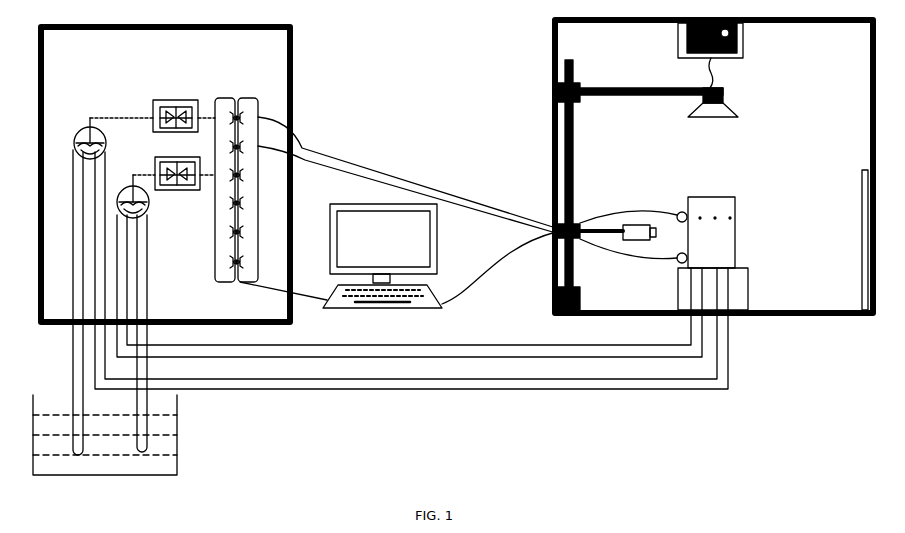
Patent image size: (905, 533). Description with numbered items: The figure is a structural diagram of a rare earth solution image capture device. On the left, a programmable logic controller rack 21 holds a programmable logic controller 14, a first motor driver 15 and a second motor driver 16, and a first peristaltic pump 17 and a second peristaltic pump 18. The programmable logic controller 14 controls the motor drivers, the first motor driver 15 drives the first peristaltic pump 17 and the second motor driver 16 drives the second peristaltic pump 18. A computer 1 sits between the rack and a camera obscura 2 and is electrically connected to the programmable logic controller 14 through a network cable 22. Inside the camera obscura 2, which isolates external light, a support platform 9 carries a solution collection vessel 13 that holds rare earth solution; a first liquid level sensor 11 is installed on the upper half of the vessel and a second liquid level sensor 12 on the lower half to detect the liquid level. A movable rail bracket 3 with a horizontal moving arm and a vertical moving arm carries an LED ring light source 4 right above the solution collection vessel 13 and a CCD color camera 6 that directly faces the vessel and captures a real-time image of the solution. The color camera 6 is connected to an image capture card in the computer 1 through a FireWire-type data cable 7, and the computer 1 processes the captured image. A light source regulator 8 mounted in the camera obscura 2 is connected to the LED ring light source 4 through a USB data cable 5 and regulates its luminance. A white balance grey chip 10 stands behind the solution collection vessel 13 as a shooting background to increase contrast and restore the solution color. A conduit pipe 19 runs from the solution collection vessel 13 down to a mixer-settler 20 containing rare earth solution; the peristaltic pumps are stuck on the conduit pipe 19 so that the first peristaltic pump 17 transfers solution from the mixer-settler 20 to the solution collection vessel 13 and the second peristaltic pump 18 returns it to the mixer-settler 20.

The computer 1 is at (402, 308).
The camera obscura 2 is at (551, 182).
The movable rail bracket 3 is at (577, 186).
The LED ring light source 4 is at (725, 98).
The USB data cable 5 is at (708, 77).
The CCD color camera 6 is at (641, 225).
The 1394 data cable 7 is at (496, 256).
The light source regulator 8 is at (686, 39).
The support platform 9 is at (750, 294).
The white balance grey chip 10 is at (862, 270).
The first liquid level sensor 11 is at (678, 263).
The second liquid level sensor 12 is at (682, 212).
The solution collection vessel 13 is at (712, 197).
The programmable logic controller 14 is at (226, 98).
The first motor driver 15 is at (176, 100).
The second motor driver 16 is at (176, 190).
The first peristaltic pump 17 is at (84, 128).
The second peristaltic pump 18 is at (128, 187).
The conduit pipe 19 is at (73, 356).
The mixer-settler 20 is at (178, 446).
The programmable logic controller rack 21 is at (294, 51).
The network cable 22 is at (238, 287).